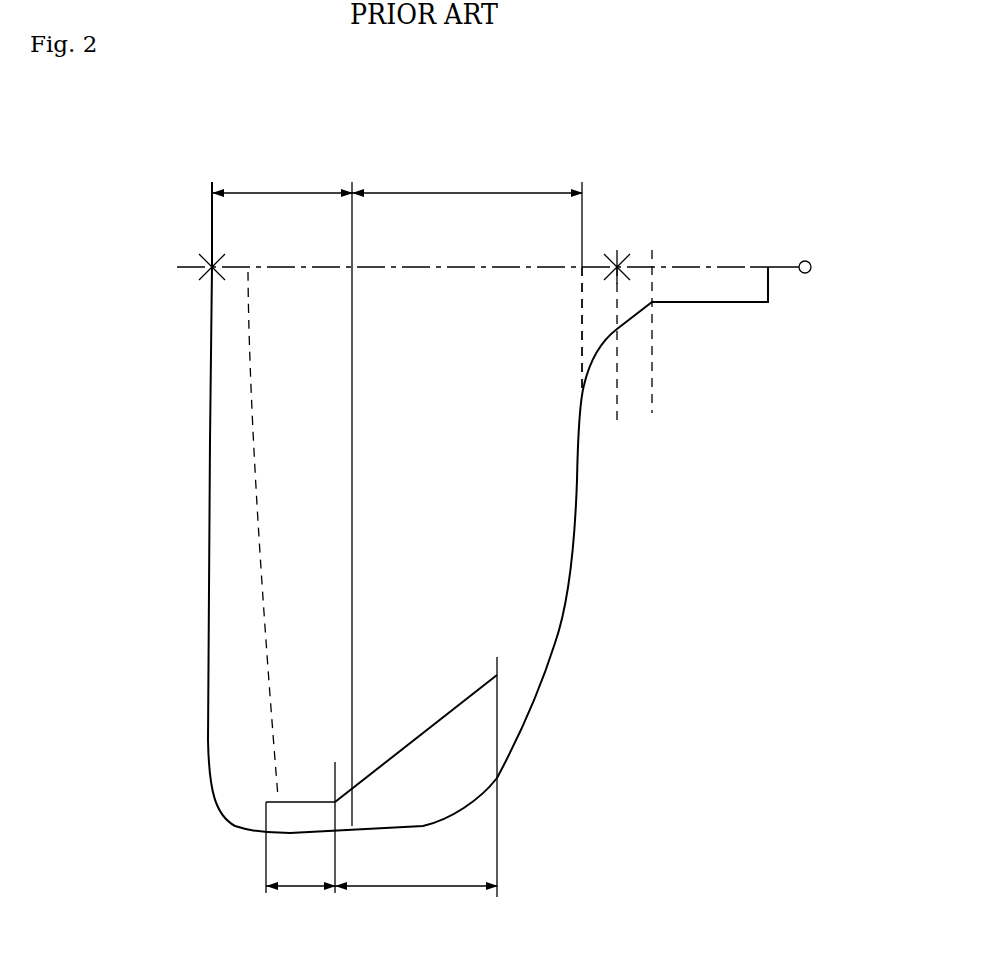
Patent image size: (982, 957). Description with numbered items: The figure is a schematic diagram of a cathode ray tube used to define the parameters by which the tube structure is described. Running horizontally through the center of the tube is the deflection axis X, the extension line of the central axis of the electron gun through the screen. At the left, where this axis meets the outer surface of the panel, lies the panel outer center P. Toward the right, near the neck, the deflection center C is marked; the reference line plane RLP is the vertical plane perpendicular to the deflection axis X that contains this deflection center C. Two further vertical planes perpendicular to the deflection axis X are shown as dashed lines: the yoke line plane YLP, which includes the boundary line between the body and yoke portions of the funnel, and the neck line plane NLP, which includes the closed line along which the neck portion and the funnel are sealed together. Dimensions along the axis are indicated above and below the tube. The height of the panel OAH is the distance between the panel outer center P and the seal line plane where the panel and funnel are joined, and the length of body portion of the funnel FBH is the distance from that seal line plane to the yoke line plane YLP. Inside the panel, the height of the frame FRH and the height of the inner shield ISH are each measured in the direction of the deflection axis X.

The panel outer center P is at (200, 278).
The deflection center C is at (624, 258).
The deflection axis X is at (805, 278).
The height of the panel OAH is at (282, 174).
The length of body portion of the funnel FBH is at (467, 273).
The height of the frame FRH is at (300, 908).
The height of the inner shield ISH is at (416, 908).
The yoke line plane YLP is at (580, 393).
The reference line plane RLP is at (617, 420).
The neck line plane NLP is at (652, 420).